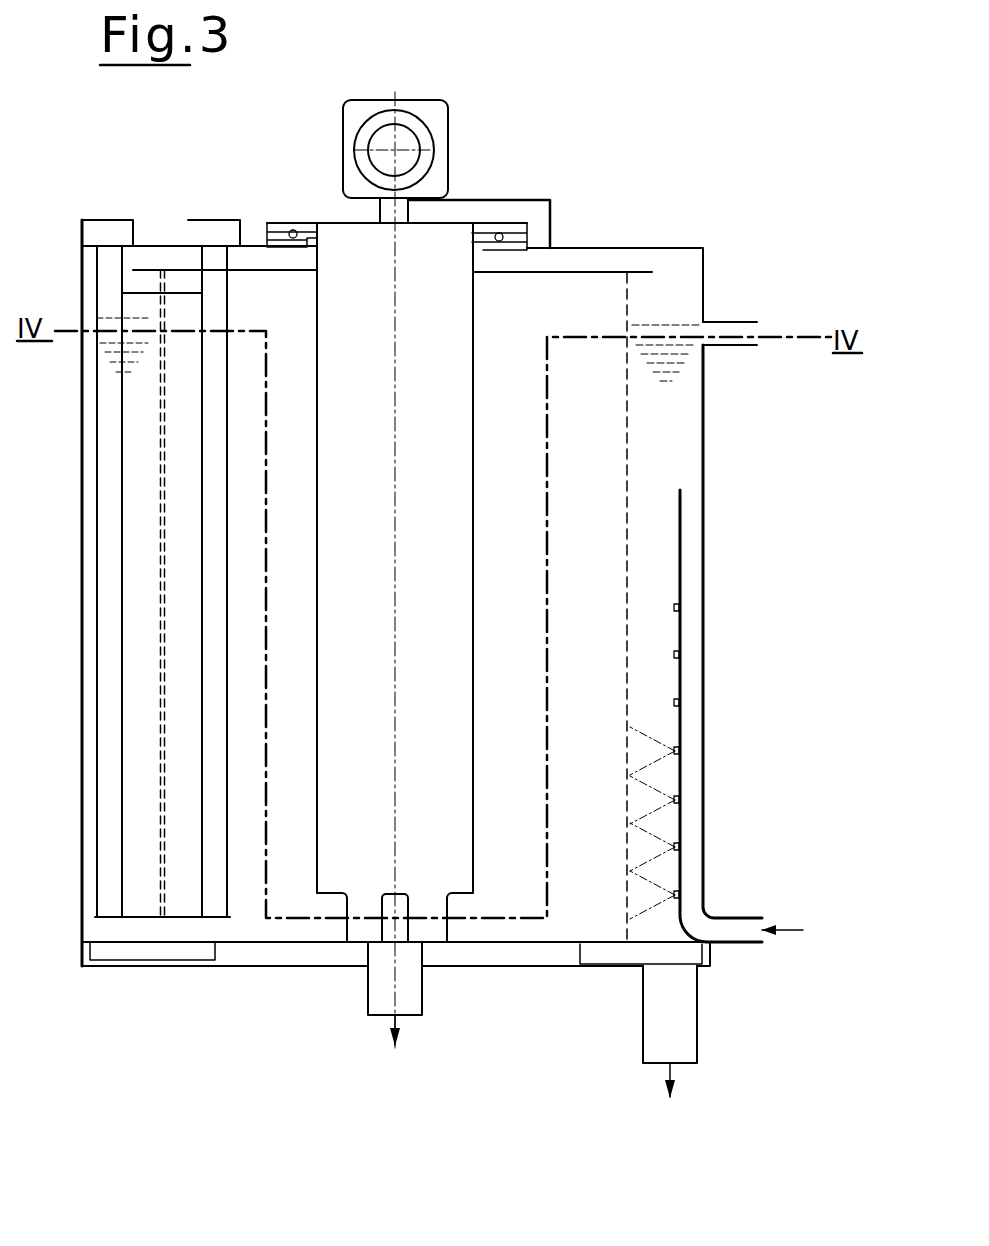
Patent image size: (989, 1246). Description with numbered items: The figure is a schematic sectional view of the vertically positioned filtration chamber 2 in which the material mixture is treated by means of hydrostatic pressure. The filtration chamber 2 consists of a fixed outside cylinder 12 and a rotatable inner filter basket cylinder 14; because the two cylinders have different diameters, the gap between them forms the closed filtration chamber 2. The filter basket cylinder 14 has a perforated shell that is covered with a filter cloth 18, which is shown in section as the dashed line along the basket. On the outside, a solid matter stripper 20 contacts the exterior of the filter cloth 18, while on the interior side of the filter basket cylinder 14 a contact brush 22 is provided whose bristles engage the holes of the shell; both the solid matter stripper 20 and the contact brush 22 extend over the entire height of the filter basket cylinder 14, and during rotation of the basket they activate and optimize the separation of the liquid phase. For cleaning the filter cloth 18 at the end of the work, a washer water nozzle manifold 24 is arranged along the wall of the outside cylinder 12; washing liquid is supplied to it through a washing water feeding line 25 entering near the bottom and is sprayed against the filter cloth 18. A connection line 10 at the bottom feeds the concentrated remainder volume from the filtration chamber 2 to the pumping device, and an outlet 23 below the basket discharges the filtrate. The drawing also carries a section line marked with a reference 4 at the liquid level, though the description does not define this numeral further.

The filtration chamber 2 is at (670, 440).
The overflow pipe 4 is at (760, 335).
The connection line 10 is at (677, 1028).
The fixed outside cylinder 12 is at (705, 500).
The rotatable inner filter basket cylinder 14 is at (602, 273).
The filter cloth 18 is at (627, 403).
The solid matter stripper 20 is at (135, 308).
The contact brush 22 is at (183, 325).
The outlet for the filtrate 23 is at (380, 993).
The washer water nozzle manifold 24 is at (682, 625).
The washing water feeding line 25 is at (725, 928).